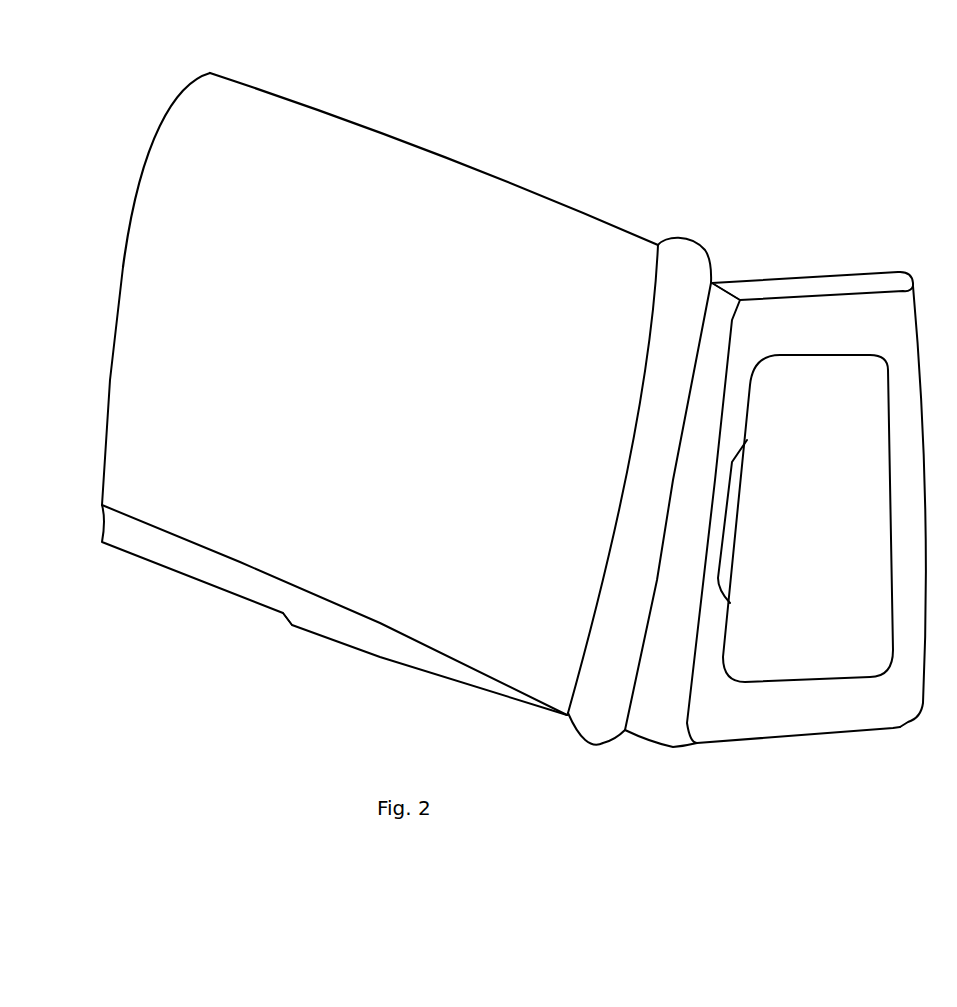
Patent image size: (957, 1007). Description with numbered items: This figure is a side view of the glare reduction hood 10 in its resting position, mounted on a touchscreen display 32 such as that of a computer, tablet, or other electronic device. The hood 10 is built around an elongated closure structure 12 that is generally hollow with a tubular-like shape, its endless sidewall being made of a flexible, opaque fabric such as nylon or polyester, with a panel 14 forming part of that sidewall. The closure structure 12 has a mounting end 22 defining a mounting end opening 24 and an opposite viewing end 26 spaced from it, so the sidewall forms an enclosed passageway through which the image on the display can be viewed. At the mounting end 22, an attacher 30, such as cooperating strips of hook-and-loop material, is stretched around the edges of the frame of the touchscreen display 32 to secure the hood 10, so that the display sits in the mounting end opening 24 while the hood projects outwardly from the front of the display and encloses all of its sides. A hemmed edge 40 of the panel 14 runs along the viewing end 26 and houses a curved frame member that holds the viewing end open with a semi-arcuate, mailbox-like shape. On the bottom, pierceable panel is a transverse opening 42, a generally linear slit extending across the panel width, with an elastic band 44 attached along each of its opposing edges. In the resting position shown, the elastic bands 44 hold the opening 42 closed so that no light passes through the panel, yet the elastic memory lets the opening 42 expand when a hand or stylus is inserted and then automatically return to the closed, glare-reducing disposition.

The glare reduction hood 10 is at (598, 124).
The closure structure 12 is at (387, 115).
The panel 14 is at (438, 205).
The mounting end 22 is at (620, 223).
The mounting end opening 24 is at (712, 272).
The viewing end 26 is at (220, 75).
The attacher 30 is at (593, 725).
The touchscreen display 32 is at (834, 260).
The hemmed edge 40 is at (122, 263).
The transverse opening 42 is at (285, 622).
The elastic band 44 is at (308, 618).